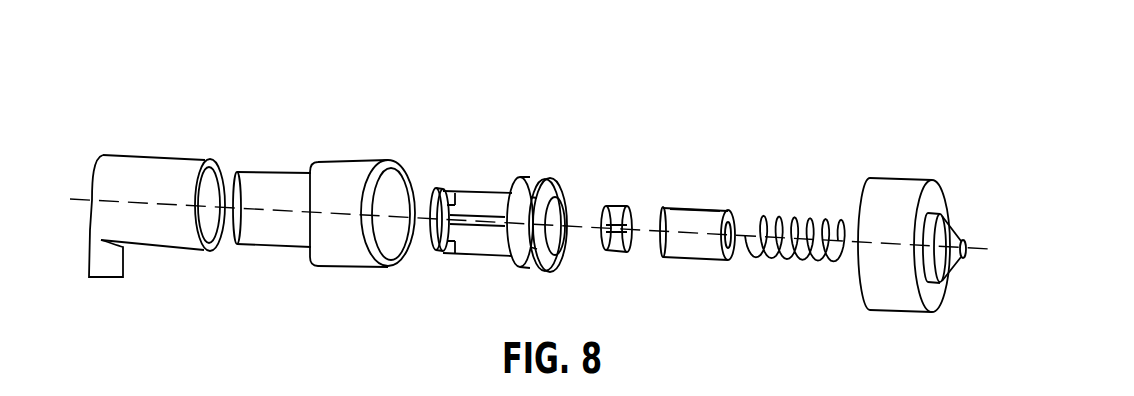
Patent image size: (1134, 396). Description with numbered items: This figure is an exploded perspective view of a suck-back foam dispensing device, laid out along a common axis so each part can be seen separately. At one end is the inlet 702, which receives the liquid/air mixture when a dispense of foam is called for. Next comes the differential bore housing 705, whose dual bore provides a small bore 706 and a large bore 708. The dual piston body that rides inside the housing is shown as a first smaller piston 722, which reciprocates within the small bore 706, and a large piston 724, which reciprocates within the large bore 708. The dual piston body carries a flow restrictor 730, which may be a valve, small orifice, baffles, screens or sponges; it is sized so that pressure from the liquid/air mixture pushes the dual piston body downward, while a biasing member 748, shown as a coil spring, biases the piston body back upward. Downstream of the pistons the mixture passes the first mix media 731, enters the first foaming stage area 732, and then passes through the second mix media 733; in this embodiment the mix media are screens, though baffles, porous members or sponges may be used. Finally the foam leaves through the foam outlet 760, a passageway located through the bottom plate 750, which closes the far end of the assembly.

The inlet 702 is at (103, 278).
The differential bore housing 705 is at (348, 57).
The small bore 706 is at (267, 178).
The large bore 708 is at (350, 168).
The first smaller piston 722 is at (440, 190).
The large piston 724 is at (542, 180).
The flow restrictor 730 is at (615, 207).
The first mix media 731 is at (662, 215).
The first foaming stage area 732 is at (697, 210).
The second mix media 733 is at (727, 212).
The biasing member 748 is at (795, 222).
The bottom plate 750 is at (898, 182).
The foam outlet 760 is at (963, 243).